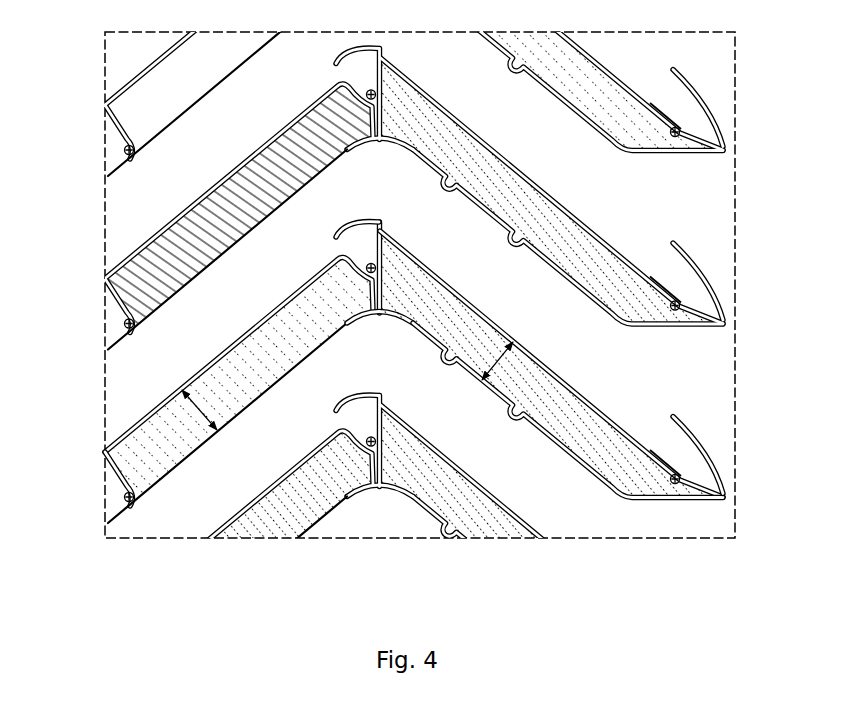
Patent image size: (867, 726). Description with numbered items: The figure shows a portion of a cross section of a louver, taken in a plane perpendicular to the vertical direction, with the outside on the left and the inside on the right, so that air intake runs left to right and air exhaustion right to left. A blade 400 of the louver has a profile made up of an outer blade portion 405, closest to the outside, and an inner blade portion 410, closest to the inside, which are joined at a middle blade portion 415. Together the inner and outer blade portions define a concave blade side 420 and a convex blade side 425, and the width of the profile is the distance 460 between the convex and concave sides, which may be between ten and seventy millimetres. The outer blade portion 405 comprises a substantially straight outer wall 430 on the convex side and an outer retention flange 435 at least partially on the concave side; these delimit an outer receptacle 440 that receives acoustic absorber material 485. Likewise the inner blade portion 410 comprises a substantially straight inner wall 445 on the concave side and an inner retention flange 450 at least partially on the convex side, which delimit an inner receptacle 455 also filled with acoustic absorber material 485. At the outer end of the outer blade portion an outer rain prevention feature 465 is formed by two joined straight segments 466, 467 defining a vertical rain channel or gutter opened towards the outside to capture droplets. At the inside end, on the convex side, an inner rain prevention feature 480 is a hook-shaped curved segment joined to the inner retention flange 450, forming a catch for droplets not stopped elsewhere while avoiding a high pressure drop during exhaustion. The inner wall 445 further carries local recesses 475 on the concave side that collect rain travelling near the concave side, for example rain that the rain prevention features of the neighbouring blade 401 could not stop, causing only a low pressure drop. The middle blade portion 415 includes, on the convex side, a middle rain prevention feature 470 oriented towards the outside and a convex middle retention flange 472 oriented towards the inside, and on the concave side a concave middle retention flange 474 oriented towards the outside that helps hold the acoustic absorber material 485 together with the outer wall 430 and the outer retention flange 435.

The blade 400 is at (686, 394).
The blade 401 is at (398, 518).
The outer blade portion 405 is at (302, 269).
The inner blade portion 410 is at (512, 307).
The middle blade portion 415 is at (382, 322).
The concave blade side 420 is at (220, 470).
The convex blade side 425 is at (146, 393).
The outer wall 430 is at (241, 338).
The outer retention flange 435 is at (163, 484).
The outer receptacle 440 is at (257, 398).
The inner wall 445 is at (554, 443).
The inner retention flange 450 is at (677, 487).
The inner receptacle 455 is at (603, 447).
The distance 460 is at (346, 393).
The outer rain prevention feature 465 is at (117, 487).
The straight segment 466 is at (106, 464).
The straight segment 467 is at (118, 524).
The middle rain prevention feature 470 is at (348, 219).
The convex middle retention flange 472 is at (436, 264).
The concave middle retention flange 474 is at (360, 322).
The local recess 475 is at (447, 365).
The inner rain prevention feature 480 is at (703, 440).
The acoustic absorber material 485 is at (490, 168).